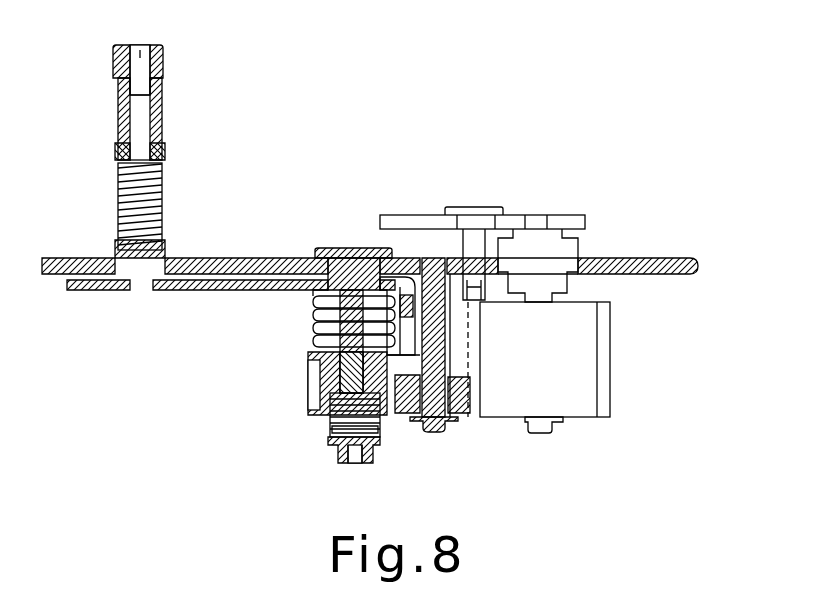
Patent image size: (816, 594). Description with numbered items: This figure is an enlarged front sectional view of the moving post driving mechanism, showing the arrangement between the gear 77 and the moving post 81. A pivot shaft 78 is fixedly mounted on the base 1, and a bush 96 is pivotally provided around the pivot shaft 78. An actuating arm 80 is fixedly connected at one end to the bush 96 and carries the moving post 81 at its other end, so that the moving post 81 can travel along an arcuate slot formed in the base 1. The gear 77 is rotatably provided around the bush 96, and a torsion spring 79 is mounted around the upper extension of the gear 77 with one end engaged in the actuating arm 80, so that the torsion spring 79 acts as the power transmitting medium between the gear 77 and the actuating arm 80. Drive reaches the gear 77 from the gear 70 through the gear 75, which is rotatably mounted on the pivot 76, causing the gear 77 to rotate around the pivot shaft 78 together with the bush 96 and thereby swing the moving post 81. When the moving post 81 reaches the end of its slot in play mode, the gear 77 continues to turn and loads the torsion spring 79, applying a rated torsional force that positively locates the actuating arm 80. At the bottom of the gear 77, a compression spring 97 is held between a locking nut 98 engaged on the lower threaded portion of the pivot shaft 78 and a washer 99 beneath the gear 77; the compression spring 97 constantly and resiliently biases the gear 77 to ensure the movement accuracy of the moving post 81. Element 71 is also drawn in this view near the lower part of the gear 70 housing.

The base 1 is at (608, 263).
The actuating arm 80 is at (101, 293).
The moving post 81 is at (147, 44).
The pivot shaft 78 is at (340, 247).
The bush 96 is at (313, 292).
The torsion spring 79 is at (313, 330).
The gear 77 is at (332, 380).
The washer 99 is at (327, 410).
The compression spring 97 is at (337, 425).
The locking nut 98 is at (338, 457).
The gear 75 is at (465, 420).
The pivot 76 is at (442, 432).
The gear 70 is at (568, 342).
The actuator pin 71 is at (550, 430).